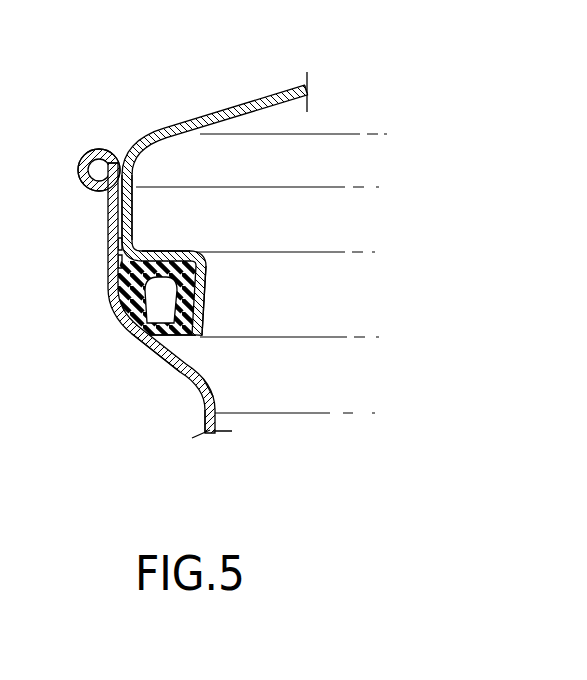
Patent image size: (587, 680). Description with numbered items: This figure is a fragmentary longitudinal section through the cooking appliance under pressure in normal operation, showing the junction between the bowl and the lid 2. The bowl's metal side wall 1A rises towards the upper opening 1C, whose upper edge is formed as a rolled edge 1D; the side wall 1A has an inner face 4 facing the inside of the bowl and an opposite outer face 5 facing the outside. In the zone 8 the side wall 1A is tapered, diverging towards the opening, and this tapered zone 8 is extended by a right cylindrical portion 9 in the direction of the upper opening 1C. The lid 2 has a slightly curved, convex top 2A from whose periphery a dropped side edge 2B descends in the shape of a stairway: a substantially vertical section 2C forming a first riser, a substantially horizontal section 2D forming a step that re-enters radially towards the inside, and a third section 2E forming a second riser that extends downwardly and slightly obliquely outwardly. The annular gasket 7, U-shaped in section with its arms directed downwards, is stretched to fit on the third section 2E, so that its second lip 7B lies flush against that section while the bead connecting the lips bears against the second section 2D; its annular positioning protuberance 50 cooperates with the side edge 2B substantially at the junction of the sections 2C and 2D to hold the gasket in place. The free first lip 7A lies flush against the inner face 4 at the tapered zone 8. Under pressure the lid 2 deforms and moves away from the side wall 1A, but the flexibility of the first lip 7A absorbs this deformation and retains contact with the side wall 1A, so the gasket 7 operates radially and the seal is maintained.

The lid 2 is at (244, 101).
The top 2A is at (287, 98).
The dropped side edge 2B is at (135, 194).
The substantially vertical section 2C is at (135, 221).
The substantially horizontal section 2D is at (166, 251).
The third section 2E is at (206, 303).
The inner face 4 is at (204, 379).
The outer face 5 is at (109, 212).
The side wall 1A is at (203, 405).
The upper opening 1C is at (124, 150).
The rolled edge 1D is at (80, 157).
The annular gasket 7 is at (120, 293).
The first lip 7A is at (128, 318).
The second lip 7B is at (198, 322).
The zone 8 is at (165, 362).
The right cylindrical portion 9 is at (109, 246).
The annular positioning protuberance 50 is at (111, 262).